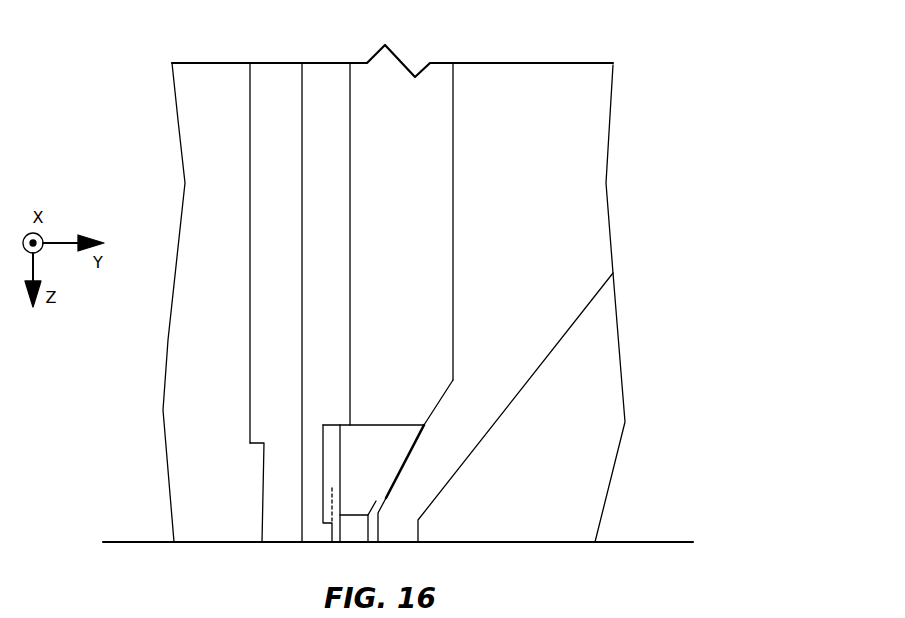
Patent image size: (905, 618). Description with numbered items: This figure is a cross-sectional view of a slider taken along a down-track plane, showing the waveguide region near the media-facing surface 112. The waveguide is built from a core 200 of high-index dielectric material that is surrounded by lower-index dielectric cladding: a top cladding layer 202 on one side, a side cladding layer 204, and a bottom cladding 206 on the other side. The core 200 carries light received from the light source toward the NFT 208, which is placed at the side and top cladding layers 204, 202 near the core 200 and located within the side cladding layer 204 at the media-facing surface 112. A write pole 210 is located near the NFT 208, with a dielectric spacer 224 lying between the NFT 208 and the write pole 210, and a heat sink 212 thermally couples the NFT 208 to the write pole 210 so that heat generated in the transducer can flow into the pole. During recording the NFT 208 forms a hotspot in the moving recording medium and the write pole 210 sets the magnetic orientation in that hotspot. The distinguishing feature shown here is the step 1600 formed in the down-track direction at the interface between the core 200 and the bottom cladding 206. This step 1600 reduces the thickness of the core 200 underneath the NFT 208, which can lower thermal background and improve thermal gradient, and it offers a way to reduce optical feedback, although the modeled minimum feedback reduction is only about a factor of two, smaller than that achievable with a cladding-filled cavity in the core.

The bottom cladding 206 is at (192, 78).
The core 200 is at (275, 77).
The top cladding layer 202 is at (335, 78).
The side cladding layer 204 is at (433, 82).
The NFT 208 is at (332, 423).
The heat sink 212 is at (365, 430).
The dielectric spacer 224 is at (352, 530).
The write pole 210 is at (441, 490).
The step 1600 is at (253, 527).
The media-facing surface 112 is at (682, 544).